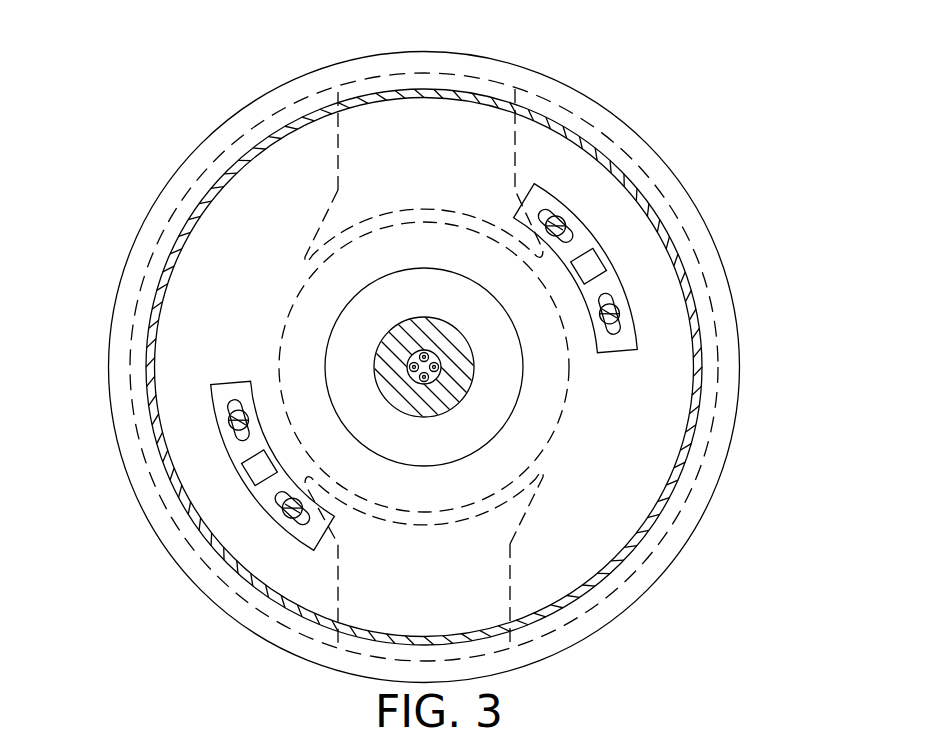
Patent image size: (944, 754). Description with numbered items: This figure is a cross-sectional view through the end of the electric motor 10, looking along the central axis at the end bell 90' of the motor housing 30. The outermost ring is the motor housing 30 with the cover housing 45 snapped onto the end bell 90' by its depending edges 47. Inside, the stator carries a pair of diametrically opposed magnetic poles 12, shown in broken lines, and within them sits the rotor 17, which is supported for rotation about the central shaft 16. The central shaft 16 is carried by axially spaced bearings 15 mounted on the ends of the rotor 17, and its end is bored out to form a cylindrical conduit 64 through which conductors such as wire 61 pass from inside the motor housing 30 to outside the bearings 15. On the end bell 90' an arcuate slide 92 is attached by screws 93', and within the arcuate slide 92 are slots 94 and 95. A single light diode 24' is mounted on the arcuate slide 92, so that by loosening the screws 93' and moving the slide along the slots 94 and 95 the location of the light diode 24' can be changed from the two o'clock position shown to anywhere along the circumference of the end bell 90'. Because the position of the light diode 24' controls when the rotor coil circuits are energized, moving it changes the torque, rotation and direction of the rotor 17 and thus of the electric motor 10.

The electric motor 10 is at (178, 86).
The motor housing 30 is at (283, 83).
The end bell 90' is at (424, 341).
The depending edges 47 is at (668, 520).
The cover housing 45 is at (641, 552).
The magnetic poles 12 is at (324, 229).
The rotor 17 is at (283, 325).
The bearings 15 is at (502, 400).
The central shaft 16 is at (437, 417).
The wire 61 is at (418, 348).
The cylindrical conduit 64 is at (437, 357).
The arcuate slide 92 is at (582, 219).
The screws 93' is at (680, 212).
The slot 94 is at (557, 218).
The slot 95 is at (621, 334).
The light diode 24' is at (678, 237).